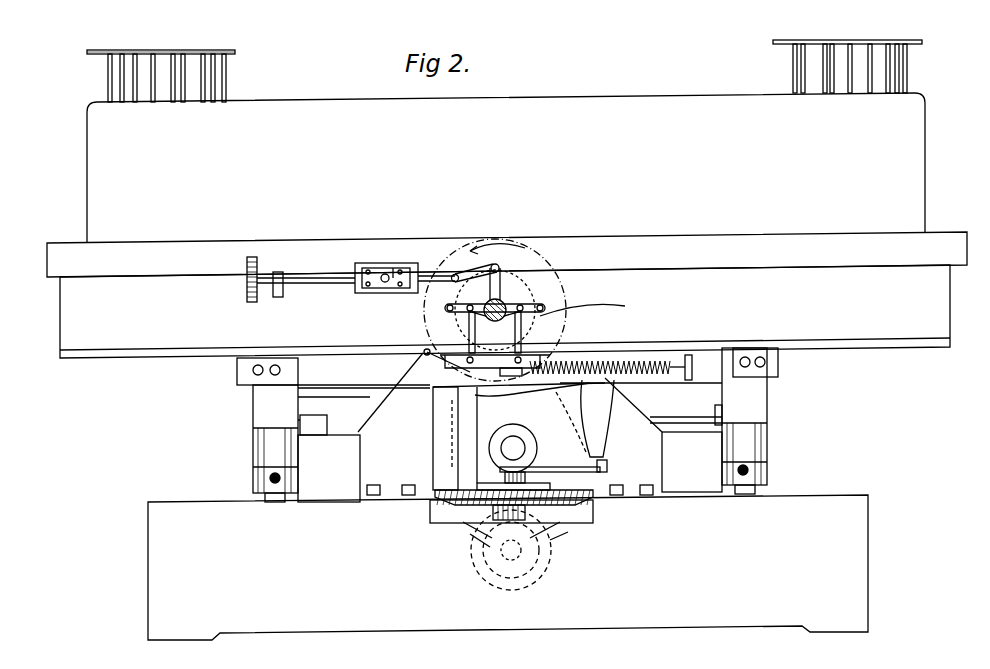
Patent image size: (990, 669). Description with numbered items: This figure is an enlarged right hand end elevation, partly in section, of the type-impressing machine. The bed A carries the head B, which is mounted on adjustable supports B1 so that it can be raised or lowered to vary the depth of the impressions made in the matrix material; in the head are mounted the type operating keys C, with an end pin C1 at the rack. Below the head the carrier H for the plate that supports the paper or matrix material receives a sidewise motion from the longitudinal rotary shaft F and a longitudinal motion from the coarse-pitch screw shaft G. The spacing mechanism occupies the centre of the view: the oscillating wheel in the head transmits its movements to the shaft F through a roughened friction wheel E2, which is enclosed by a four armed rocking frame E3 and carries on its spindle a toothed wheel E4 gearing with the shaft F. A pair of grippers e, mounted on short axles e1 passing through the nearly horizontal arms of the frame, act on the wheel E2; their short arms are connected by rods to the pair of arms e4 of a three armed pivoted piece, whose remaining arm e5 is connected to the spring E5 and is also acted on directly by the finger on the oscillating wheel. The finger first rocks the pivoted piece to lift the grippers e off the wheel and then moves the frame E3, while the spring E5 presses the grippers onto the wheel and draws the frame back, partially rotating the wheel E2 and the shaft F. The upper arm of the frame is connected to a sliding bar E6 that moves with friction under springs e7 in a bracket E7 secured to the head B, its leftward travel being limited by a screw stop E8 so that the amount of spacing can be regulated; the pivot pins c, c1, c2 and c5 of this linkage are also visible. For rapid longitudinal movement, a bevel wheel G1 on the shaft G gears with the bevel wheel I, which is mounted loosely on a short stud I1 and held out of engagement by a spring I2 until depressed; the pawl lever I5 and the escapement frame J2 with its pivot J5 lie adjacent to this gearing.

The bed A is at (676, 606).
The head B is at (506, 168).
The adjustable supports B1 is at (252, 448).
The type operating keys C is at (210, 50).
The rack end pin C1 is at (216, 81).
The friction wheel E2 is at (512, 280).
The four armed rocking frame E3 is at (510, 310).
The toothed wheel E4 is at (588, 302).
The spring E5 is at (655, 360).
The sliding bar E6 is at (494, 308).
The bracket E7 is at (385, 294).
The screw stop E8 is at (288, 292).
The pawls, clamps or grippers e is at (465, 300).
The short axles e1 is at (452, 292).
The arms of three armed lever e4 is at (492, 331).
The arm of three armed lever e5 is at (469, 325).
The springs e7 is at (393, 268).
The pin c is at (522, 322).
The pin c1 is at (540, 307).
The pin c2 is at (522, 312).
The pin c5 is at (523, 335).
The longitudinal rotary shaft F is at (514, 448).
The screw threaded shaft G is at (470, 570).
The bevel wheel G1 is at (548, 575).
The carrier H is at (329, 449).
The bevel wheel I is at (593, 515).
The short stud I1 is at (474, 547).
The spring I2 is at (563, 535).
The pawl lever I5 is at (603, 443).
The escapement frame J2 is at (495, 365).
The escapement pivot J5 is at (424, 354).